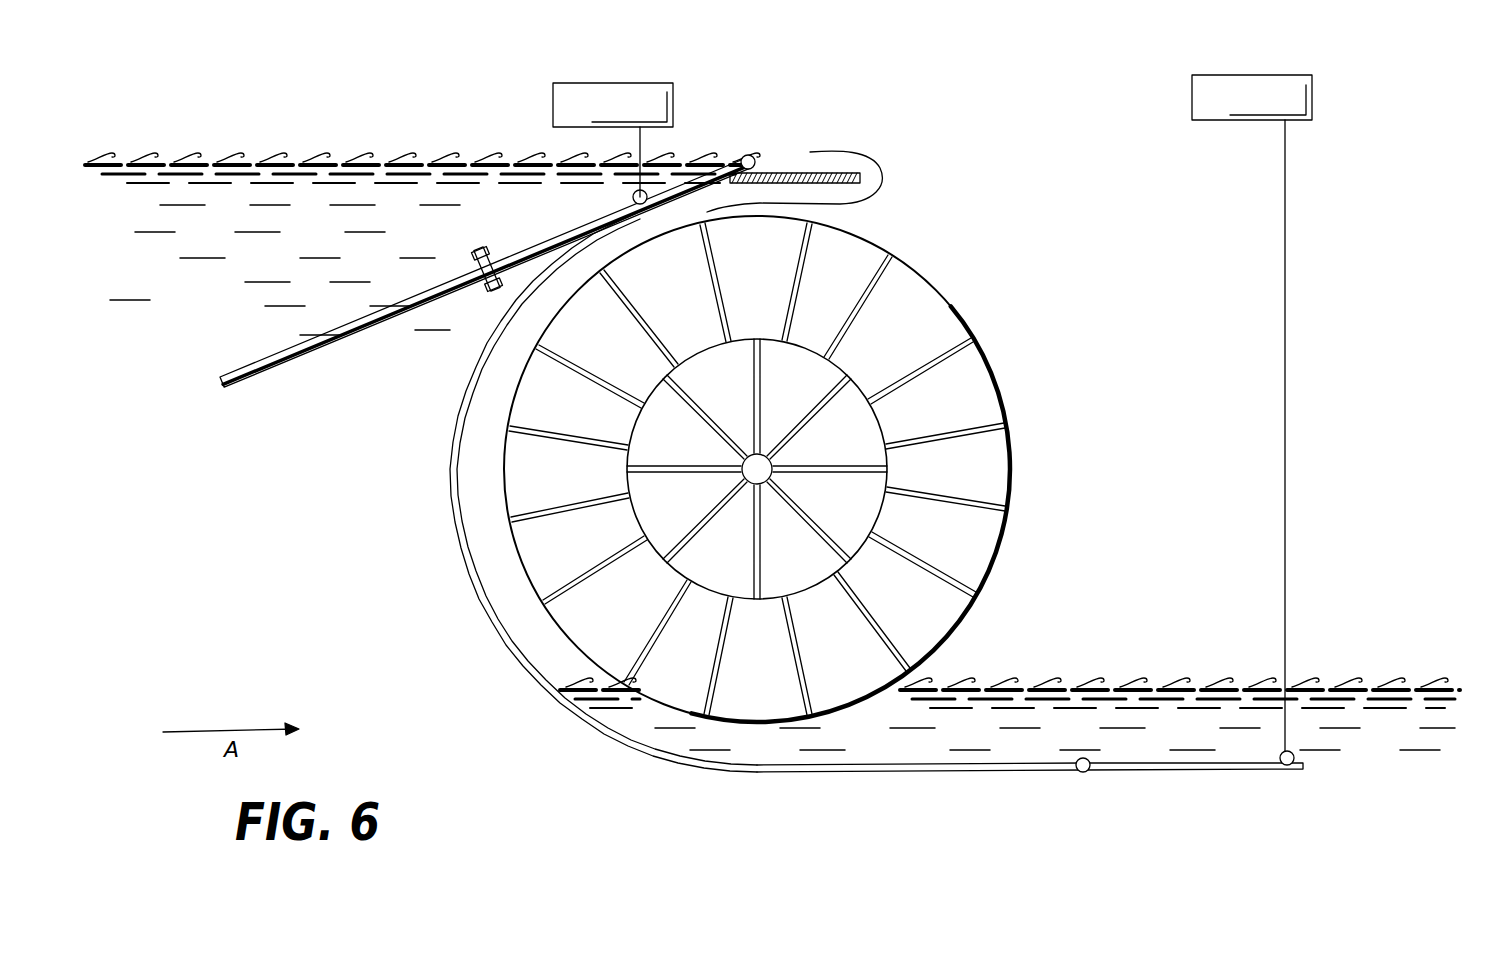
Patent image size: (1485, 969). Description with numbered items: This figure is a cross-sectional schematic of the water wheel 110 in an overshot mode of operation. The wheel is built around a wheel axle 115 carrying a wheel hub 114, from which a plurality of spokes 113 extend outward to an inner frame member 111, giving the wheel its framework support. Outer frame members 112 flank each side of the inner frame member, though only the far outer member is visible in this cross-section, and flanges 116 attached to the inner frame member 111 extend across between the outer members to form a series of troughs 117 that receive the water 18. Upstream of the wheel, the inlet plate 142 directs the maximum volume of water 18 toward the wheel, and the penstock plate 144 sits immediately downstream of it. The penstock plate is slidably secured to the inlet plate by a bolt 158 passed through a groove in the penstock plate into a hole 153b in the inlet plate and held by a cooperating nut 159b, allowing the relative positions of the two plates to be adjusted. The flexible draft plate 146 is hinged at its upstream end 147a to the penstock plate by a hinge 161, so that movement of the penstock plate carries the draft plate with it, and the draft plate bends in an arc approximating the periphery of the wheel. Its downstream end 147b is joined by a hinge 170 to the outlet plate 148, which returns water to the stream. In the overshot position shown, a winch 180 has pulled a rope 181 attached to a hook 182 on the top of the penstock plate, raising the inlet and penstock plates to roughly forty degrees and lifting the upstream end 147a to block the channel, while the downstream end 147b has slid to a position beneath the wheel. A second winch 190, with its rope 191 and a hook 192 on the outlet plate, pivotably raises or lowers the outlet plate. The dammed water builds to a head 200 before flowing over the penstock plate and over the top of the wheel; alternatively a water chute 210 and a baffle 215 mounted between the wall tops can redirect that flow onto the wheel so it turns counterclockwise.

The water 18 is at (181, 156).
The water wheel 110 is at (798, 399).
The inner frame member 111 is at (700, 352).
The outer frame members 112 is at (933, 287).
The spokes 113 is at (843, 478).
The wheel hub 114 is at (742, 472).
The wheel axle 115 is at (760, 462).
The flanges 116 is at (813, 243).
The troughs 117 is at (973, 473).
The inlet plate 142 is at (508, 230).
The penstock plate 144 is at (578, 212).
The flexible draft plate 146 is at (845, 522).
The upstream end 147a is at (460, 398).
The downstream end 147b is at (1047, 771).
The outlet plate 148 is at (1198, 768).
The hole 153b is at (467, 292).
The bolt 158 is at (434, 281).
The nut 159b is at (460, 258).
The hinge 161 is at (750, 154).
The hinge 170 is at (1081, 772).
The winch 180 is at (553, 100).
The rope 181 is at (648, 140).
The hook 182 is at (637, 208).
The winch 190 is at (1260, 423).
The rope 191 is at (1283, 325).
The hook 192 is at (1290, 768).
The head 200 is at (688, 127).
The water chute 210 is at (796, 172).
The baffle 215 is at (868, 150).